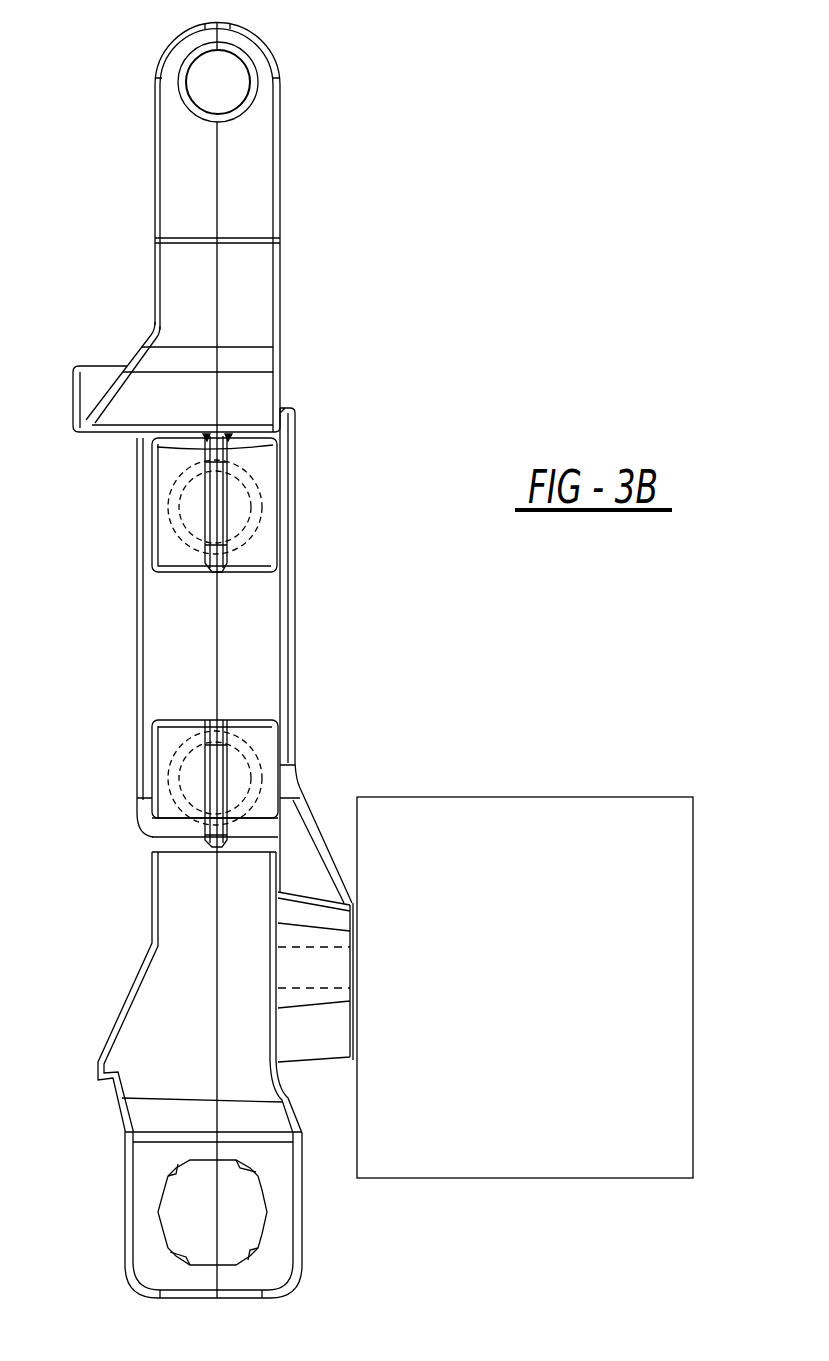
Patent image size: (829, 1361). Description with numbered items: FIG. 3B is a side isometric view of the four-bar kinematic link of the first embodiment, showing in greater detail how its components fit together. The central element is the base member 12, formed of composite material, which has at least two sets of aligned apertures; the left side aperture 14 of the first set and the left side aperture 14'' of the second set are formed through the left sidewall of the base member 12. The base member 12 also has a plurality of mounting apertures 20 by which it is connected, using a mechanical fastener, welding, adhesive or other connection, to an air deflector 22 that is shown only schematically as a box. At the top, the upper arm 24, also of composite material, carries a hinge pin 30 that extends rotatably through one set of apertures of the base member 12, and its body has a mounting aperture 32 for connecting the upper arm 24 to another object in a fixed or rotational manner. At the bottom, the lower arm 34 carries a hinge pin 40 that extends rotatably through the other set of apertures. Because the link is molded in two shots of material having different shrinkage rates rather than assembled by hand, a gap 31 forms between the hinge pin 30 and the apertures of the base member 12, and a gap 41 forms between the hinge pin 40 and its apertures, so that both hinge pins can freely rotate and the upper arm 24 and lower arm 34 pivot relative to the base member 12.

The base member 12 is at (262, 627).
The left side aperture 14 is at (289, 507).
The left side aperture 14'' is at (303, 745).
The mounting aperture 20 is at (315, 947).
The air deflector 22 is at (630, 1178).
The upper arm 24 is at (248, 202).
The hinge pin 30 is at (180, 513).
The gap 31 is at (257, 508).
The mounting aperture 32 is at (245, 72).
The lower arm 34 is at (178, 977).
The hinge pin 40 is at (180, 772).
The gap 41 is at (183, 805).